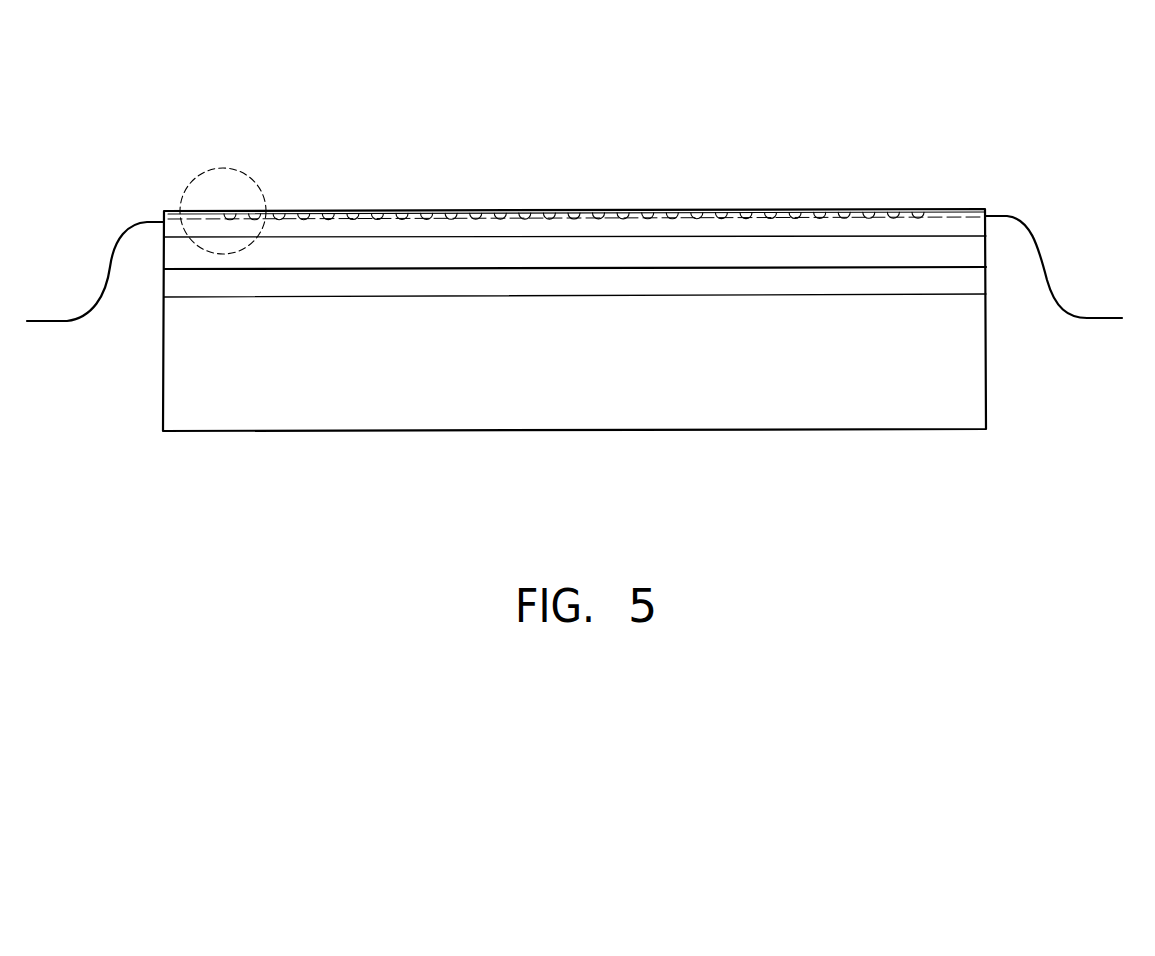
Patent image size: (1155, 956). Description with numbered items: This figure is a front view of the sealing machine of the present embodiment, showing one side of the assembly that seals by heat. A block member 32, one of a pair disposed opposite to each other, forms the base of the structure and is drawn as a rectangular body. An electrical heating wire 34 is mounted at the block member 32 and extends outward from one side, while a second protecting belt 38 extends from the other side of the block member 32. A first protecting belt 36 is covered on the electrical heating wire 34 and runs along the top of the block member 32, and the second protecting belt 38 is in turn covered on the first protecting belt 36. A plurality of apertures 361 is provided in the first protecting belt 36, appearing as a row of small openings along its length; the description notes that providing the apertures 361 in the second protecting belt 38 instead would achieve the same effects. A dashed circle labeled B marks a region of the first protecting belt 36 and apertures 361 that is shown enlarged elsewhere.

The block member 32 is at (923, 421).
The electrical heating wire 34 is at (72, 318).
The first protecting belt 36 is at (313, 210).
The aperture 361 is at (398, 213).
The second protecting belt 38 is at (945, 207).
The detail region B is at (202, 172).